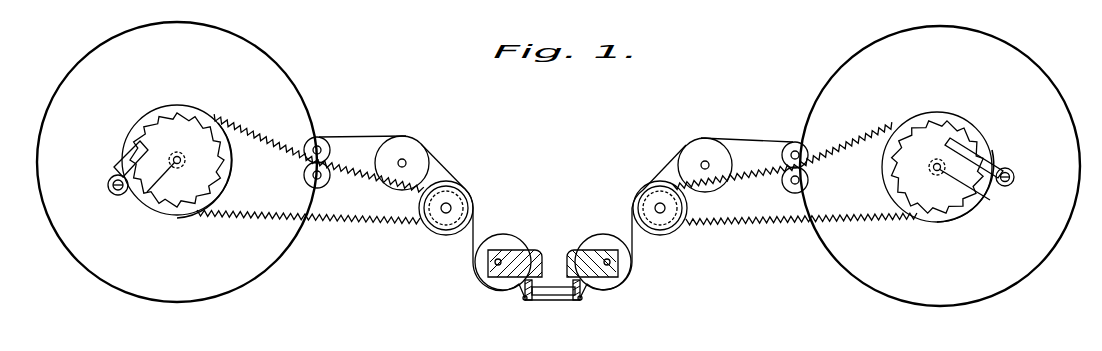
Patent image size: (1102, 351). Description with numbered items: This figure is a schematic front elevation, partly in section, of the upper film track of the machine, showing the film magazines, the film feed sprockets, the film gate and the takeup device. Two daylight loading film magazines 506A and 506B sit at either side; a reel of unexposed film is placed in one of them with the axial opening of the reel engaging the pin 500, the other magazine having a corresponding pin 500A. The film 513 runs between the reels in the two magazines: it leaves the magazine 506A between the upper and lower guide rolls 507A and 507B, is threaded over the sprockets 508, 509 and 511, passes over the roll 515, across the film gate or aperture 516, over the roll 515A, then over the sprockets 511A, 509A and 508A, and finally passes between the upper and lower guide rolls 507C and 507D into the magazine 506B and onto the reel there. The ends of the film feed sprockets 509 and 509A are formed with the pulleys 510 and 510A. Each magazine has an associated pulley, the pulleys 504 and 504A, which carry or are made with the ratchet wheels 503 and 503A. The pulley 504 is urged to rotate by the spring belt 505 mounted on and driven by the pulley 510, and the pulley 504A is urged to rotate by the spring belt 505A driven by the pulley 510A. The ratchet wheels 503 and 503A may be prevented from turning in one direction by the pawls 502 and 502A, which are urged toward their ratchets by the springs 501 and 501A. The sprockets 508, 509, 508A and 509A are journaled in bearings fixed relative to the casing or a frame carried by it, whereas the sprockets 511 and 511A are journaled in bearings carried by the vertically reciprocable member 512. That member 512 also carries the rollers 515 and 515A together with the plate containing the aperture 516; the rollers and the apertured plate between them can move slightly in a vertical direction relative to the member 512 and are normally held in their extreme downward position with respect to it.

The pin 500 is at (147, 193).
The spring 501 is at (110, 180).
The pawl 502 is at (115, 167).
The ratchet wheel 503 is at (180, 123).
The pulley 504 is at (232, 180).
The spring belt 505 is at (260, 116).
The daylight loading film magazine 506A is at (303, 95).
The upper guide roll 507A is at (327, 142).
The lower guide roll 507B is at (329, 181).
The film feed sprocket 508 is at (423, 148).
The film feed sprocket 509 is at (468, 195).
The pulley 510 is at (447, 224).
The sprocket 511 is at (484, 280).
The vertically reciprocable member 512 is at (577, 248).
The film 513 is at (477, 229).
The roll 515 is at (524, 300).
The roll 515A is at (582, 300).
The film gate or aperture 516 is at (560, 297).
The film feed sprocket 509A is at (636, 196).
The pulley 510A is at (688, 205).
The sprocket 511A is at (633, 267).
The film feed sprocket 508A is at (727, 128).
The spring belt 505A is at (888, 127).
The daylight loading film magazine 506B is at (836, 71).
The upper guide roll 507C is at (798, 147).
The lower guide roll 507D is at (807, 183).
The pulley 504A is at (893, 197).
The ratchet wheel 503A is at (953, 135).
The pin 500A is at (1007, 203).
The pawl 502A is at (993, 152).
The spring 501A is at (1014, 173).